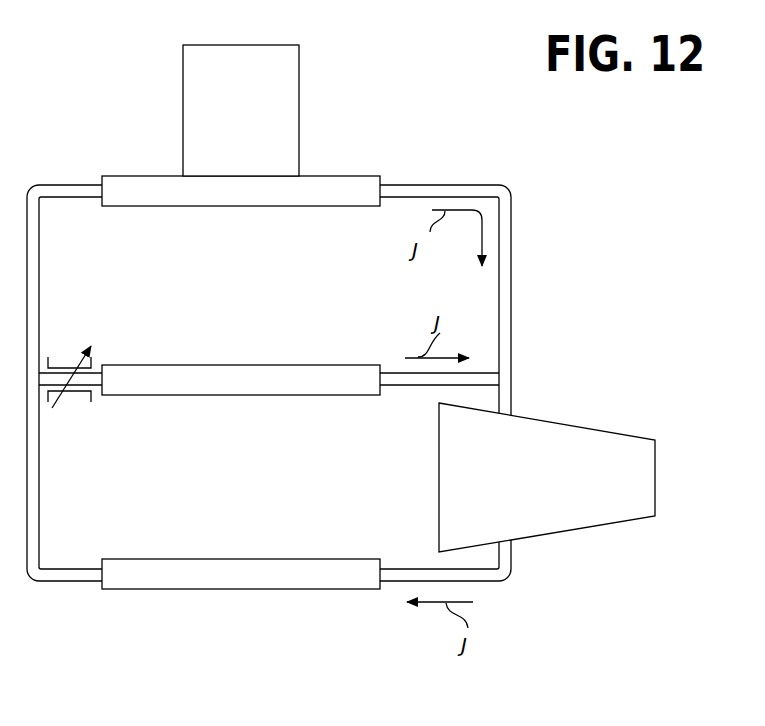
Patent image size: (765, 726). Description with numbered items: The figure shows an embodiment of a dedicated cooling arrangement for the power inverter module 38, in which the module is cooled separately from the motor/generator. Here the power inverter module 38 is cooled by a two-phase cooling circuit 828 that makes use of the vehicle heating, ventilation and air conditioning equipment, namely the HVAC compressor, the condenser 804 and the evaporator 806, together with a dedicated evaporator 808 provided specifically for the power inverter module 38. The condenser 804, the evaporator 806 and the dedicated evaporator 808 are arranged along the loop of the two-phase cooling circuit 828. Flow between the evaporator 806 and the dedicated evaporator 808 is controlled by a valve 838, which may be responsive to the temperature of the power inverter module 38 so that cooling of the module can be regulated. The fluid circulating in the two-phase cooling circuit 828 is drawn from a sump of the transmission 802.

The power inverter module 38 is at (241, 110).
The two-phase cooling circuit 828 is at (450, 150).
The dedicated evaporator 808 is at (238, 206).
The evaporator 806 is at (238, 395).
The condenser 804 is at (235, 559).
The transmission 802 is at (543, 420).
The valve 838 is at (77, 409).